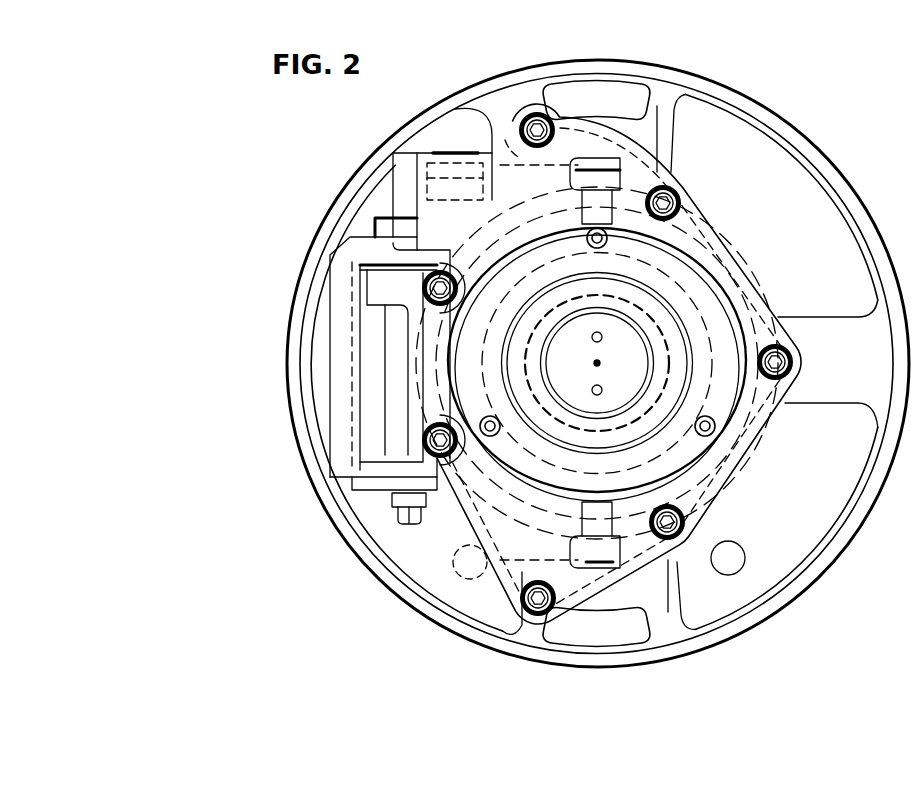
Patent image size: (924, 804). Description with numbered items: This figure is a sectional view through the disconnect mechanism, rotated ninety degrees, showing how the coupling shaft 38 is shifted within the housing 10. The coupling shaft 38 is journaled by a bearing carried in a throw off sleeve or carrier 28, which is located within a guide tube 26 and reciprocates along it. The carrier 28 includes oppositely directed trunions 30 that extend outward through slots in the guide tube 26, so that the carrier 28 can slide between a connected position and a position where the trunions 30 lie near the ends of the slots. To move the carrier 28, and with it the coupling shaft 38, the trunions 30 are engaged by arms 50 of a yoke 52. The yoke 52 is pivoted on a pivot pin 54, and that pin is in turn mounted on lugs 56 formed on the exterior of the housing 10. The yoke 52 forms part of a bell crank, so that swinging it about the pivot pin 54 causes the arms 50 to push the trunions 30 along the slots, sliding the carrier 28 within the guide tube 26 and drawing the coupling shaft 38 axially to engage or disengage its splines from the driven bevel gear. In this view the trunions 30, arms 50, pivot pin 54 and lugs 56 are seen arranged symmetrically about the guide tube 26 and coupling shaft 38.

The housing 10 is at (280, 393).
The guide tube 26 is at (742, 260).
The throw off sleeve or carrier 28 is at (497, 280).
The trunions 30 is at (669, 195).
The coupling shaft 38 is at (708, 286).
The arms 50 is at (552, 172).
The yoke 52 is at (340, 288).
The pivot pin 54 is at (398, 373).
The lugs 56 is at (380, 285).